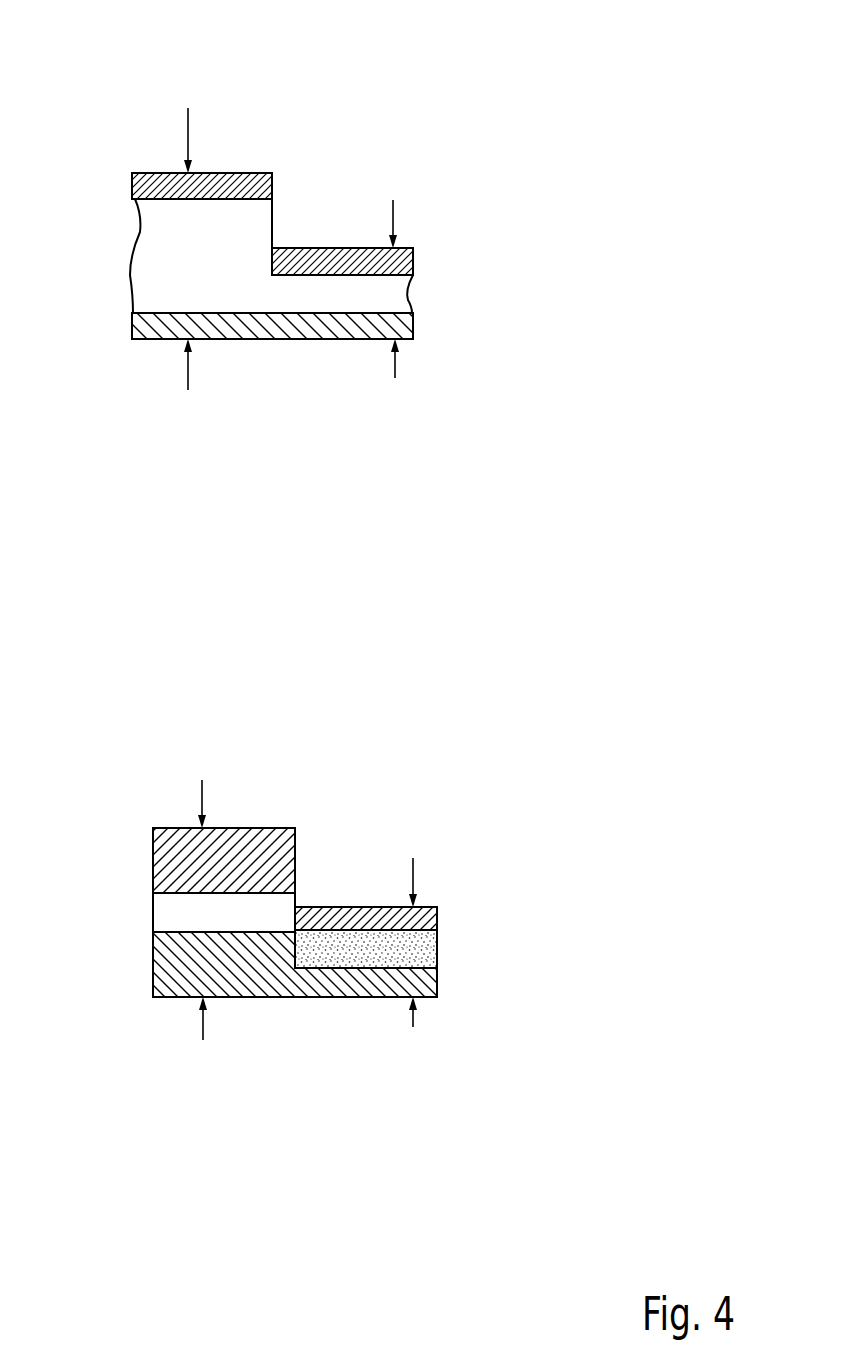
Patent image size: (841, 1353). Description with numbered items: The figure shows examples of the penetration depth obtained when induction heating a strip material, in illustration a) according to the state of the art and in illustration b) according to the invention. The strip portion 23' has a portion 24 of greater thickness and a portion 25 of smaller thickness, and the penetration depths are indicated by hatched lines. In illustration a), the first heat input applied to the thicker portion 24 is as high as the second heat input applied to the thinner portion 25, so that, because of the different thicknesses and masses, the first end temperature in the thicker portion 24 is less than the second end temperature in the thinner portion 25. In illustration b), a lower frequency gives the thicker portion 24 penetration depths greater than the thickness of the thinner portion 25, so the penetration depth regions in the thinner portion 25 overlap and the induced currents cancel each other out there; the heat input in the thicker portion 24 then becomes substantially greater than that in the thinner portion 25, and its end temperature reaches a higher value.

The strip portion 23' is at (358, 230).
The portion having greater thickness 24 is at (157, 243).
The portion having smaller thickness 25 is at (407, 293).